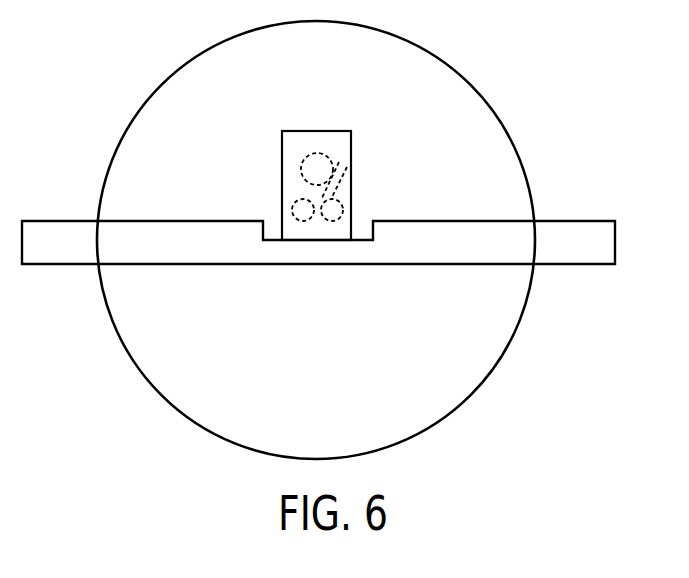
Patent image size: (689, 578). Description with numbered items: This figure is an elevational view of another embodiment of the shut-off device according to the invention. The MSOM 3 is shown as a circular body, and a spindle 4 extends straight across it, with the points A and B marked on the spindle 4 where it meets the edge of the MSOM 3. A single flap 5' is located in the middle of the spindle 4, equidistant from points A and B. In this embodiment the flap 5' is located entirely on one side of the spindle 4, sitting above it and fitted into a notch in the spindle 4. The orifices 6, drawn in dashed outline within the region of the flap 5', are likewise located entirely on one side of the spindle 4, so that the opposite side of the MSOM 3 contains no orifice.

The MSOM 3 is at (333, 376).
The spindle 4 is at (566, 248).
The flap 5' is at (334, 156).
The orifices 6 is at (343, 164).